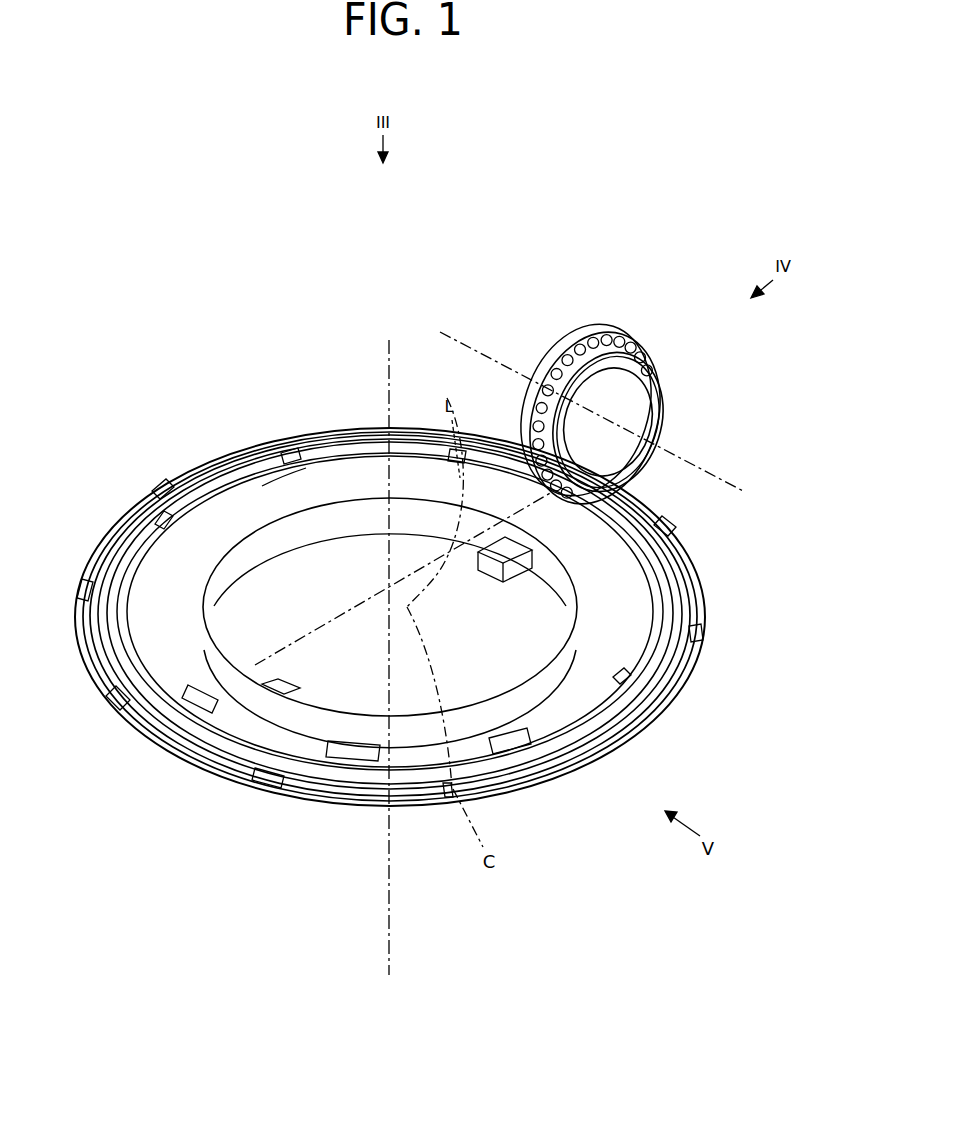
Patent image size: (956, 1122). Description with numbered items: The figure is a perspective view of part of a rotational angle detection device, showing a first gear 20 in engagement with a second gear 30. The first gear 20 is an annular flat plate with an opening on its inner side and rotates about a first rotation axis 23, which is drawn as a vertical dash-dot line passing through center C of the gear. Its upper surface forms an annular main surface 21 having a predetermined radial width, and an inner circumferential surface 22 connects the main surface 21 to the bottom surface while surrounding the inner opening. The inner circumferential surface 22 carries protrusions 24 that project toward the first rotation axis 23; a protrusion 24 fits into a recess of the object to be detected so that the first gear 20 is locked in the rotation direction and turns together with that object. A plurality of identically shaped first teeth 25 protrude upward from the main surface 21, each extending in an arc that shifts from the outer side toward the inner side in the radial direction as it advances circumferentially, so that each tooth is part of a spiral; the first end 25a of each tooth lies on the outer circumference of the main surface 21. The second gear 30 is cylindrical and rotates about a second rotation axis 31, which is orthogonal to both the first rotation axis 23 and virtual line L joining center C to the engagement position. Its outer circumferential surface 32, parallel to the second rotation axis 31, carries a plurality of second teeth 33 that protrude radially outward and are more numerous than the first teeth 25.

The first gear 20 is at (176, 460).
The main surface 21 is at (657, 728).
The inner circumferential surface 22 is at (318, 522).
The first rotation axis 23 is at (388, 365).
The protrusion 24 is at (493, 588).
The first teeth 25 is at (222, 783).
The first end 25a is at (283, 478).
The second gear 30 is at (636, 360).
The second rotation axis 31 is at (735, 502).
The outer circumferential surface 32 is at (650, 342).
The second teeth 33 is at (602, 343).